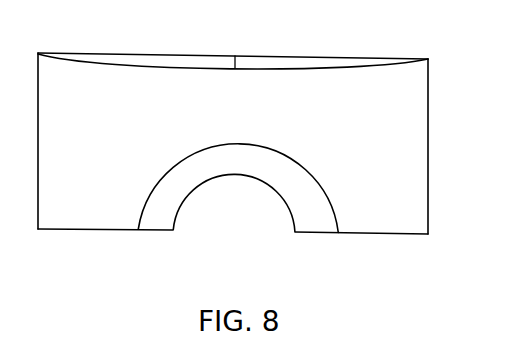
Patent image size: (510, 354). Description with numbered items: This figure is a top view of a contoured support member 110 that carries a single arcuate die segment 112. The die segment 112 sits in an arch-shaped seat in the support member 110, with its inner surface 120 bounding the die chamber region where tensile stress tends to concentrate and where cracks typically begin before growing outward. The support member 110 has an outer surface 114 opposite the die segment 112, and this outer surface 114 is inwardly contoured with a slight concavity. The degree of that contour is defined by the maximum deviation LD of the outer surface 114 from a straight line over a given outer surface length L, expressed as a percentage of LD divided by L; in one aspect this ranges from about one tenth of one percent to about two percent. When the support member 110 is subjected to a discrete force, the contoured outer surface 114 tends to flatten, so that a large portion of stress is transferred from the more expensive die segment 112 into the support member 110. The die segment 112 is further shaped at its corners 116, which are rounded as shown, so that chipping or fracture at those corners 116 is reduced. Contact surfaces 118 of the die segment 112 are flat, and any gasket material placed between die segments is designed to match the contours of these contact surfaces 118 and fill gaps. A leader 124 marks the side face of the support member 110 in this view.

The support member 110 is at (233, 143).
The arcuate die segment 112 is at (322, 224).
The outer surface 114 is at (330, 66).
The corners 116 is at (295, 232).
The contact surfaces 118 is at (106, 229).
The inner surface 120 is at (192, 206).
The side face 124 is at (428, 162).
The outer surface length L is at (158, 55).
The maximum deviation LD is at (233, 61).